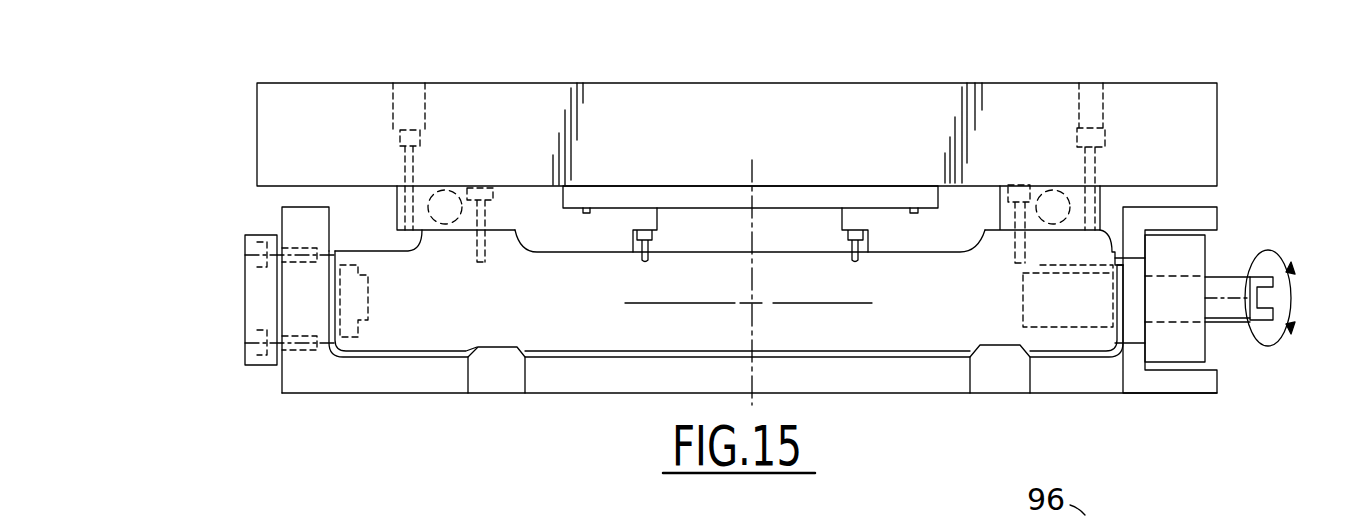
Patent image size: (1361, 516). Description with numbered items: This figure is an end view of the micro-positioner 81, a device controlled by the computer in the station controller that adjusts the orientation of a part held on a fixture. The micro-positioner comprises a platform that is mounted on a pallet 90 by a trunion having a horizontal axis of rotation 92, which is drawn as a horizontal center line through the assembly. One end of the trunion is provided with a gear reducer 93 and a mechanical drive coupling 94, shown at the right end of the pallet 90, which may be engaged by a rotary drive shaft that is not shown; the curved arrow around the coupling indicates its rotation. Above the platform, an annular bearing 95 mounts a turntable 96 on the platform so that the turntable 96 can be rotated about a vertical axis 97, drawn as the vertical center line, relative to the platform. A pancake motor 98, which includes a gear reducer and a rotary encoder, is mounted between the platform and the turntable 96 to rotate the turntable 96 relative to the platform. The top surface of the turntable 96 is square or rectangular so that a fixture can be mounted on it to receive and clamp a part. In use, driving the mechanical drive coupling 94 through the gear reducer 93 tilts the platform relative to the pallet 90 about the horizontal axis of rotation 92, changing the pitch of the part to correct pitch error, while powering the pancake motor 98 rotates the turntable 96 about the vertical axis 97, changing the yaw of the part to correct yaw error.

The micro-positioner 81 is at (226, 234).
The pallet 90 is at (1132, 380).
The horizontal axis of rotation 92 is at (820, 303).
The gear reducer 93 is at (1213, 248).
The mechanical drive coupling 94 is at (1240, 330).
The annular bearing 95 is at (447, 190).
The turntable 96 is at (1157, 83).
The vertical axis 97 is at (752, 170).
The pancake motor 98 is at (825, 205).